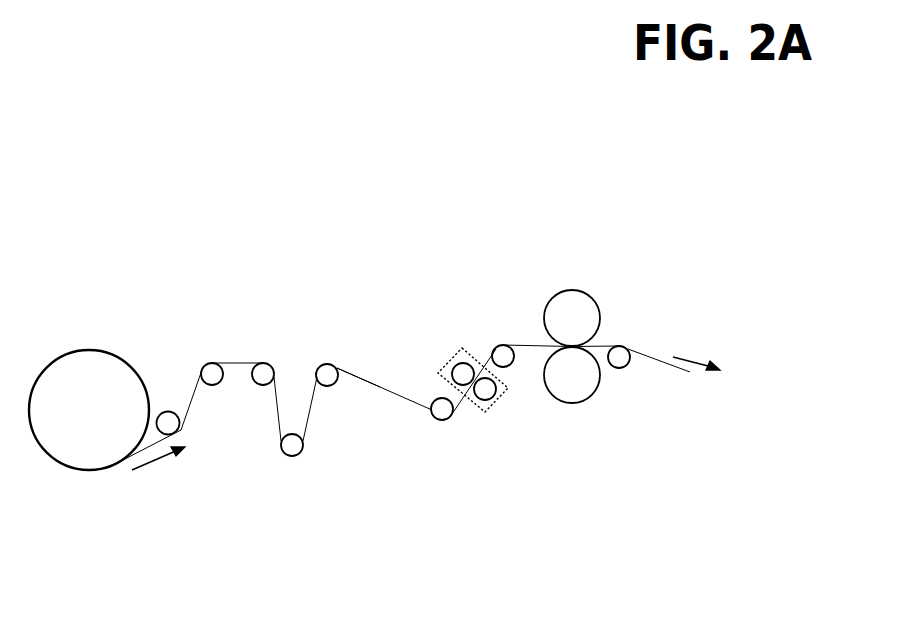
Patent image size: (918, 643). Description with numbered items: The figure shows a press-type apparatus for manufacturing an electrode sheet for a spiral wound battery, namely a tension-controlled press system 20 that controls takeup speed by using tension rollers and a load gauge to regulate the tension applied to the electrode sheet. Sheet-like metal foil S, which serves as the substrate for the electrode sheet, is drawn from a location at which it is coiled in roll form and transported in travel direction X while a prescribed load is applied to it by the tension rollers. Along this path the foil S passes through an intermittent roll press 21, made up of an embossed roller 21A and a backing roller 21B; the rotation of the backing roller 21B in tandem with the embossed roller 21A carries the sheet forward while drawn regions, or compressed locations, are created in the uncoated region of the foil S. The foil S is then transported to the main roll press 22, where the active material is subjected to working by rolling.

The tension-controlled press system 20 is at (568, 532).
The intermittent roll press 21 is at (468, 403).
The embossed roller 21A is at (457, 365).
The backing roller 21B is at (483, 399).
The main roll press 22 is at (571, 290).
The sheet-like metal foil S is at (390, 393).
The travel direction X is at (708, 372).